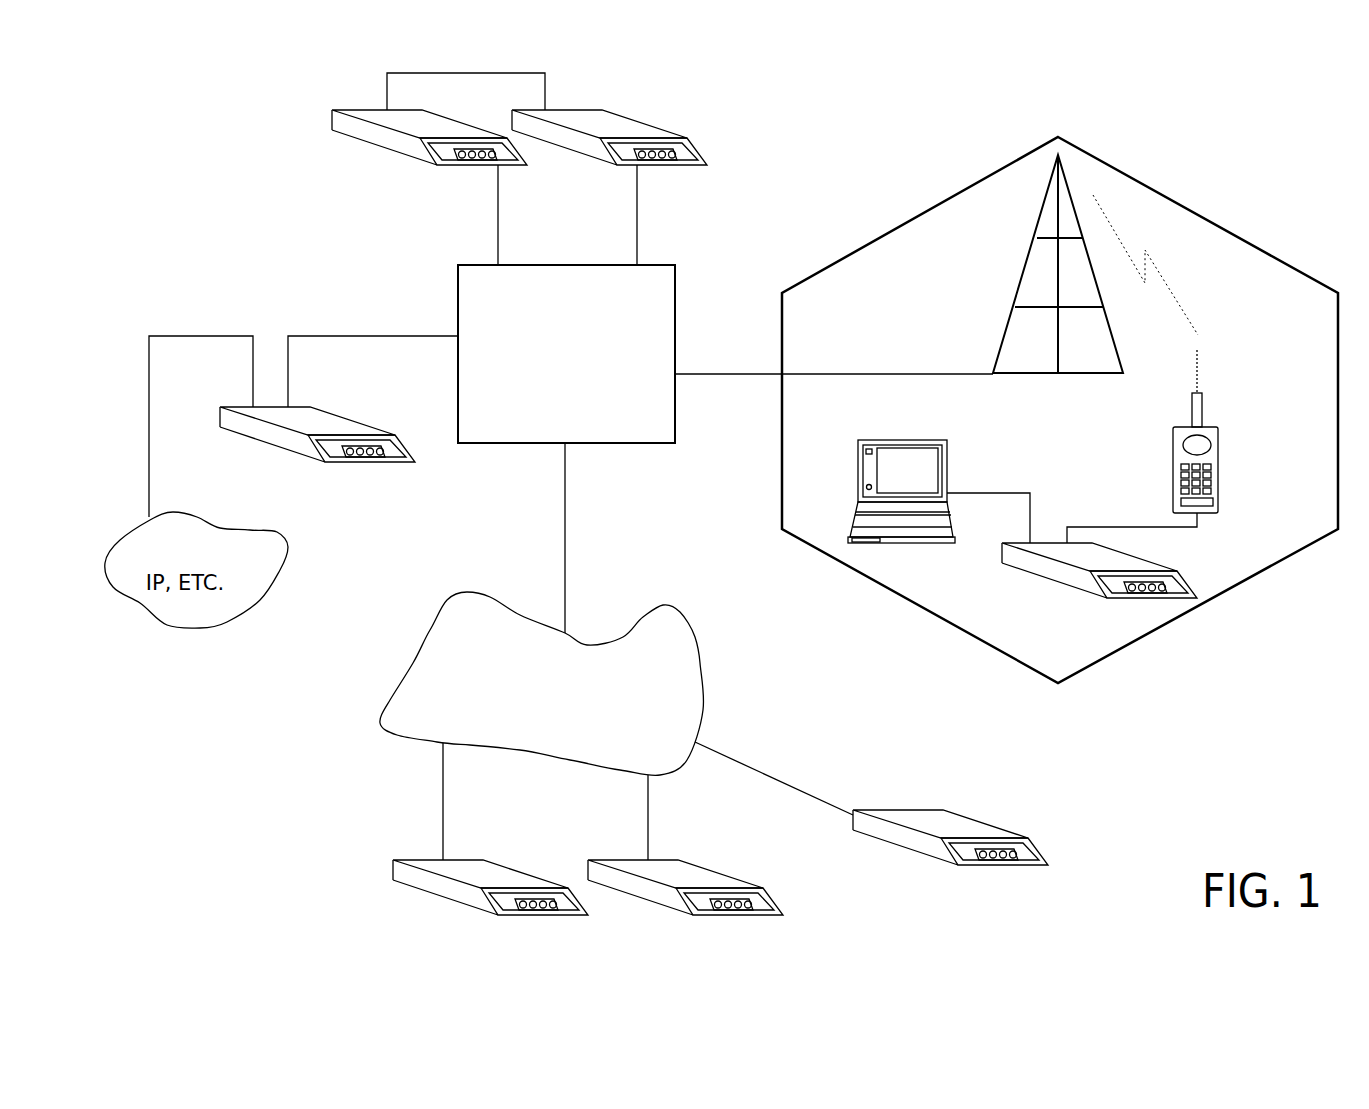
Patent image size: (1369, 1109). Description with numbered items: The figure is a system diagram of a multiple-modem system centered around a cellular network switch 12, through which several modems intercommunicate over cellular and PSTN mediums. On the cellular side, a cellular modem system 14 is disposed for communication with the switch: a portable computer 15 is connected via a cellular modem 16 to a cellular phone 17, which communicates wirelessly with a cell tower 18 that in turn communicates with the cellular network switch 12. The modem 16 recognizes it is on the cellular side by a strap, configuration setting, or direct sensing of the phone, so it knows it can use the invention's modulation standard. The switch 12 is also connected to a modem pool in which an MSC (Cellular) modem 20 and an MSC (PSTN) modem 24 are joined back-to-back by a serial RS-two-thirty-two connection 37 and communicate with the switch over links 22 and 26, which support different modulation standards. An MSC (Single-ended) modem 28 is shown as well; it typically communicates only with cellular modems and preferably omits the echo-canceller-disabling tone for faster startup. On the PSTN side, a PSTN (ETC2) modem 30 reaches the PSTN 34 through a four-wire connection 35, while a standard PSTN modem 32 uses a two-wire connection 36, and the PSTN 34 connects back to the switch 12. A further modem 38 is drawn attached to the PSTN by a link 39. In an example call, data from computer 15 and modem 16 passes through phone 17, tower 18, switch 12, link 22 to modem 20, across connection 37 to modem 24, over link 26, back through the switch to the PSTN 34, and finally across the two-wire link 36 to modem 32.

The cellular network switch 12 is at (633, 447).
The cellular modem system 14 is at (1213, 597).
The portable computer 15 is at (900, 545).
The cellular modem 16 is at (1058, 582).
The cellular phone 17 is at (1160, 437).
The cell tower 18 is at (1008, 317).
The MSC (Cellular) modem 20 is at (560, 110).
The link 22 is at (635, 247).
The MSC (PSTN) modem 24 is at (362, 110).
The link 26 is at (497, 247).
The MSC (Single-ended) modem 28 is at (367, 463).
The PSTN (ETC2) modem 30 is at (515, 918).
The standard PSTN modem 32 is at (717, 918).
The PSTN 34 is at (702, 710).
The four-wire connection 35 is at (437, 833).
The two-wire connection 36 is at (643, 817).
The RS-232 connection 37 is at (498, 73).
The modem 38 is at (972, 863).
The connection line 39 is at (797, 792).